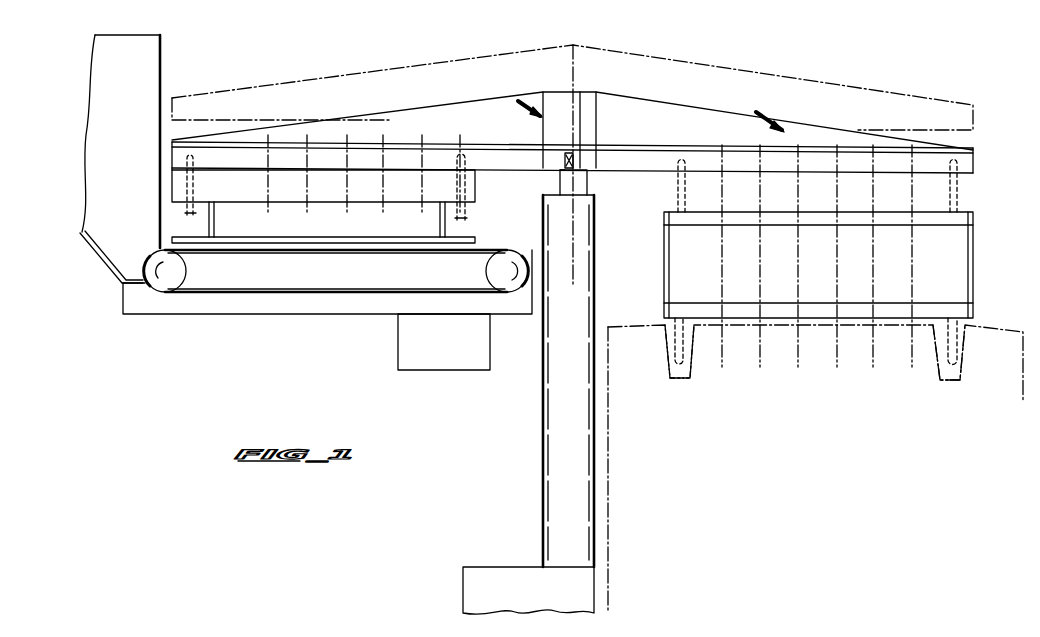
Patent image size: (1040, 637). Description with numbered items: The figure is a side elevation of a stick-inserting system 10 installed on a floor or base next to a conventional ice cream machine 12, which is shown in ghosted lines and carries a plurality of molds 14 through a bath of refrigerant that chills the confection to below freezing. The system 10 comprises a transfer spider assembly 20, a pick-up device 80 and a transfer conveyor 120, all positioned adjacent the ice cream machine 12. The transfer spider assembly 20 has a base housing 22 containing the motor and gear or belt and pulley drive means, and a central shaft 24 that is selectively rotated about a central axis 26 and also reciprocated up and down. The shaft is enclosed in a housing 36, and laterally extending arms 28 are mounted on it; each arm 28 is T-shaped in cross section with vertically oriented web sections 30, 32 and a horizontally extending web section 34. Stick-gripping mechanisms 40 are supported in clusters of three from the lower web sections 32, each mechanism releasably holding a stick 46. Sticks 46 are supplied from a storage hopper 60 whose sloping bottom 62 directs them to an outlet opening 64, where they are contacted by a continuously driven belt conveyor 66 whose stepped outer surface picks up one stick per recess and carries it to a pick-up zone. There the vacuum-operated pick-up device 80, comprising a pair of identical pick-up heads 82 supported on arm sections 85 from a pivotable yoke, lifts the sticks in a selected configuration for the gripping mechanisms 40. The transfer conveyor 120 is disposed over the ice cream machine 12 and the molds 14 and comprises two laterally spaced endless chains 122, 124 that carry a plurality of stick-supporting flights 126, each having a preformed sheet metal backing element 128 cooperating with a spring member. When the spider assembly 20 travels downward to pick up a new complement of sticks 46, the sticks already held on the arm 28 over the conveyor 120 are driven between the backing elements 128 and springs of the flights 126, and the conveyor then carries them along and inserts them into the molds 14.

The stick-inserting system 10 is at (282, 343).
The ice cream machine 12 is at (1003, 333).
The molds 14 is at (691, 363).
The transfer spider assembly 20 is at (543, 328).
The base housing 22 is at (502, 571).
The central shaft 24 is at (587, 185).
The central axis 26 is at (573, 78).
The laterally extending arms 28 is at (572, 97).
The vertically-oriented web section 30 is at (571, 130).
The lower web section 32 is at (580, 160).
The horizontally-extending web section 34 is at (500, 147).
The housing 36 is at (594, 272).
The stick-gripping mechanisms 40 is at (560, 171).
The stick 46 is at (191, 246).
The storage hopper 60 is at (121, 141).
The sloping bottom 62 is at (93, 250).
The outlet opening 64 is at (152, 253).
The continuous belt conveyor 66 is at (217, 292).
The pick-up device 80 is at (481, 240).
The pick-up heads 82 is at (241, 192).
The arm sections 85 is at (216, 225).
The transfer conveyor 120 is at (980, 246).
The endless chain 122 is at (974, 291).
The endless chain 124 is at (669, 273).
The stick-supporting flights 126 is at (975, 215).
The sheet metal backing element 128 is at (845, 220).